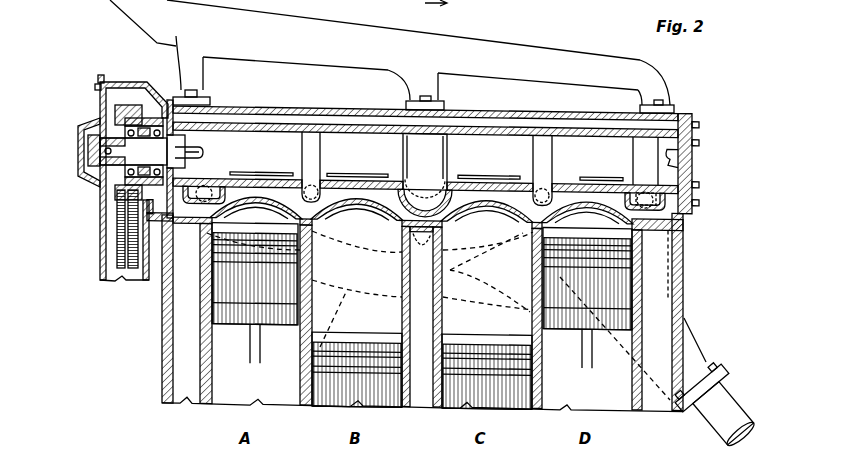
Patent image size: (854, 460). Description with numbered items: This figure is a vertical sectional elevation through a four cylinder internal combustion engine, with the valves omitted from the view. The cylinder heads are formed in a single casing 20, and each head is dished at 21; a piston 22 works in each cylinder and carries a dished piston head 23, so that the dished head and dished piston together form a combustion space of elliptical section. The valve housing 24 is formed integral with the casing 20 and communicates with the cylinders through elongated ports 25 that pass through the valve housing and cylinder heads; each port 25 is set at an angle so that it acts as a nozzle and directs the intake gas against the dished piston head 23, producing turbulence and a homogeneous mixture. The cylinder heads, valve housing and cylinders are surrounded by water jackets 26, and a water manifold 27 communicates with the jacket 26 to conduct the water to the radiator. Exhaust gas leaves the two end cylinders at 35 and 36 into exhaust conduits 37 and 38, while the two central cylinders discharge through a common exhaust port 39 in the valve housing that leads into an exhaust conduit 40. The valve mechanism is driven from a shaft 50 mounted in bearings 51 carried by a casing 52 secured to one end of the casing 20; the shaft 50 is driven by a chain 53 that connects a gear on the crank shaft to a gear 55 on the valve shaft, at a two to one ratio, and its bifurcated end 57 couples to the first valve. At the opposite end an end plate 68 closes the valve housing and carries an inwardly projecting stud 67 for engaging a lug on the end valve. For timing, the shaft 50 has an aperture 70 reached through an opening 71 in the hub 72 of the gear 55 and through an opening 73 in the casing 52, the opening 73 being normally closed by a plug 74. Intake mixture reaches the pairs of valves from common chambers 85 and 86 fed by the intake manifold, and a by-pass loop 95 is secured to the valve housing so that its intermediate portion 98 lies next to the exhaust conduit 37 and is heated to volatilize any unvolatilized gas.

The casing 20 is at (686, 222).
The dished cylinder head 21 is at (574, 208).
The piston 22 is at (235, 320).
The dished piston head 23 is at (343, 330).
The valve housing 24 is at (692, 168).
The port 25 is at (243, 181).
The water jacket 26 is at (178, 324).
The water manifold 27 is at (403, 31).
The exhaust outlet 35 is at (140, 222).
The exhaust outlet 36 is at (686, 254).
The exhaust conduit 37 is at (331, 318).
The exhaust conduit 38 is at (685, 316).
The common exhaust port 39 is at (425, 190).
The exhaust conduit 40 is at (438, 315).
The valve shaft 50 is at (133, 151).
The bearing 51 is at (150, 118).
The casing 52 is at (128, 82).
The chain 53 is at (118, 264).
The gear 55 is at (117, 110).
The bifurcated end 57 is at (203, 153).
The stud 67 is at (699, 152).
The end plate 68 is at (689, 116).
The aperture 70 is at (100, 153).
The opening 71 is at (110, 127).
The hub 72 is at (88, 141).
The opening 73 is at (96, 86).
The plug 74 is at (101, 75).
The common chamber 85 is at (314, 153).
The common chamber 86 is at (545, 153).
The loop 95 is at (486, 251).
The intermediate portion of the loop 98 is at (423, 257).